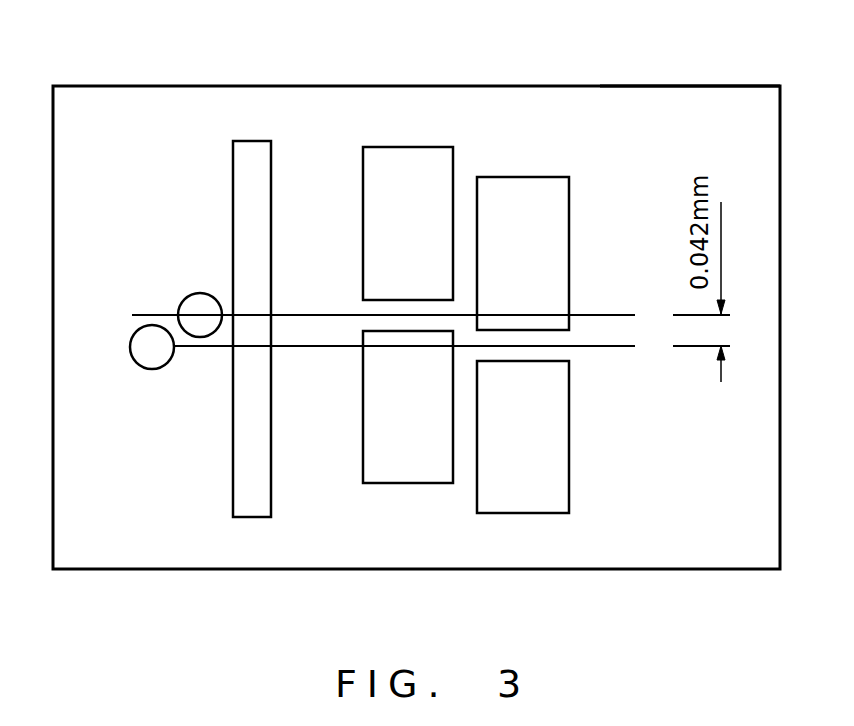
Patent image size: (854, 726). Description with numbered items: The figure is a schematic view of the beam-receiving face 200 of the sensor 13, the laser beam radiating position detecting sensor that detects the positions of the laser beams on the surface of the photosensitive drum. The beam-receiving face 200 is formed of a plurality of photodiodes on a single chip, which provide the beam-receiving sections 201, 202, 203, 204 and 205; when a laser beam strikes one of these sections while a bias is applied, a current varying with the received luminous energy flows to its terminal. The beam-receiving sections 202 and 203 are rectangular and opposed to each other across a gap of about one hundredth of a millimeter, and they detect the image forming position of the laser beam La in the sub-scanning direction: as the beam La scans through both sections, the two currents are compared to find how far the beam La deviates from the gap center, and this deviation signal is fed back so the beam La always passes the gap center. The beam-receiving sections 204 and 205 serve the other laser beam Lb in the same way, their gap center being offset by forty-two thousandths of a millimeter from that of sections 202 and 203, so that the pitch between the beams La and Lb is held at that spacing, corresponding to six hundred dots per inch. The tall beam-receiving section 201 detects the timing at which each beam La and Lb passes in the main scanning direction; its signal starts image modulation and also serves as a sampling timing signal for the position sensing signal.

The sensor 13 is at (704, 86).
The beam-receiving face 200 is at (145, 86).
The beam-receiving section 201 is at (249, 141).
The beam-receiving section 202 is at (420, 147).
The beam-receiving section 203 is at (406, 484).
The beam-receiving section 204 is at (533, 177).
The beam-receiving section 205 is at (540, 514).
The laser beam La is at (199, 293).
The laser beam Lb is at (133, 341).